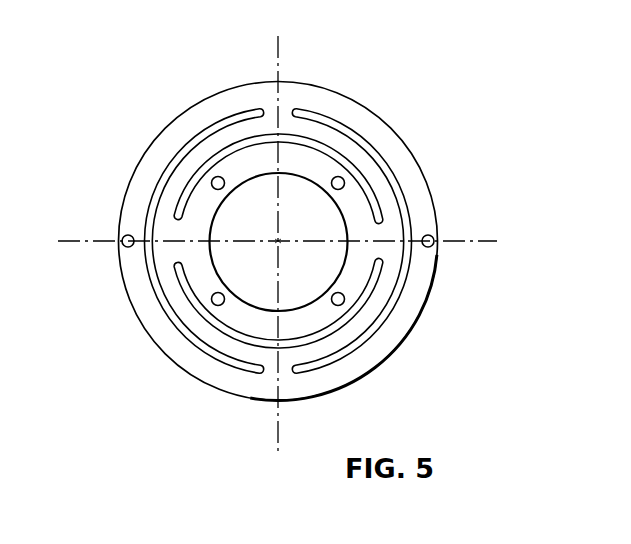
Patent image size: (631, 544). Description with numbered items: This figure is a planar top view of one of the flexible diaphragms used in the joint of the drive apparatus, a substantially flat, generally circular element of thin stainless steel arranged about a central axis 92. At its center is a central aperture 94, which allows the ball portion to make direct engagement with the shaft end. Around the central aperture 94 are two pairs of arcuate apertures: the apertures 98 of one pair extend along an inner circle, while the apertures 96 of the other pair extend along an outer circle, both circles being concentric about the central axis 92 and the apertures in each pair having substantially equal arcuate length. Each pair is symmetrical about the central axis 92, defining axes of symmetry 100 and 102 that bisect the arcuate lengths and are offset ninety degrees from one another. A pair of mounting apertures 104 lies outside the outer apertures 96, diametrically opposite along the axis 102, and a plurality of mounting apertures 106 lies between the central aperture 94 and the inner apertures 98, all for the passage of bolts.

The central axis 92 is at (277, 240).
The central aperture 94 is at (328, 192).
The outer pair of arcuate apertures 96 is at (210, 127).
The inner pair of arcuate apertures 98 is at (335, 153).
The axis of symmetry 100 is at (273, 47).
The axis of symmetry 102 is at (78, 238).
The mounting apertures 104 is at (430, 235).
The mounting apertures 106 is at (212, 304).